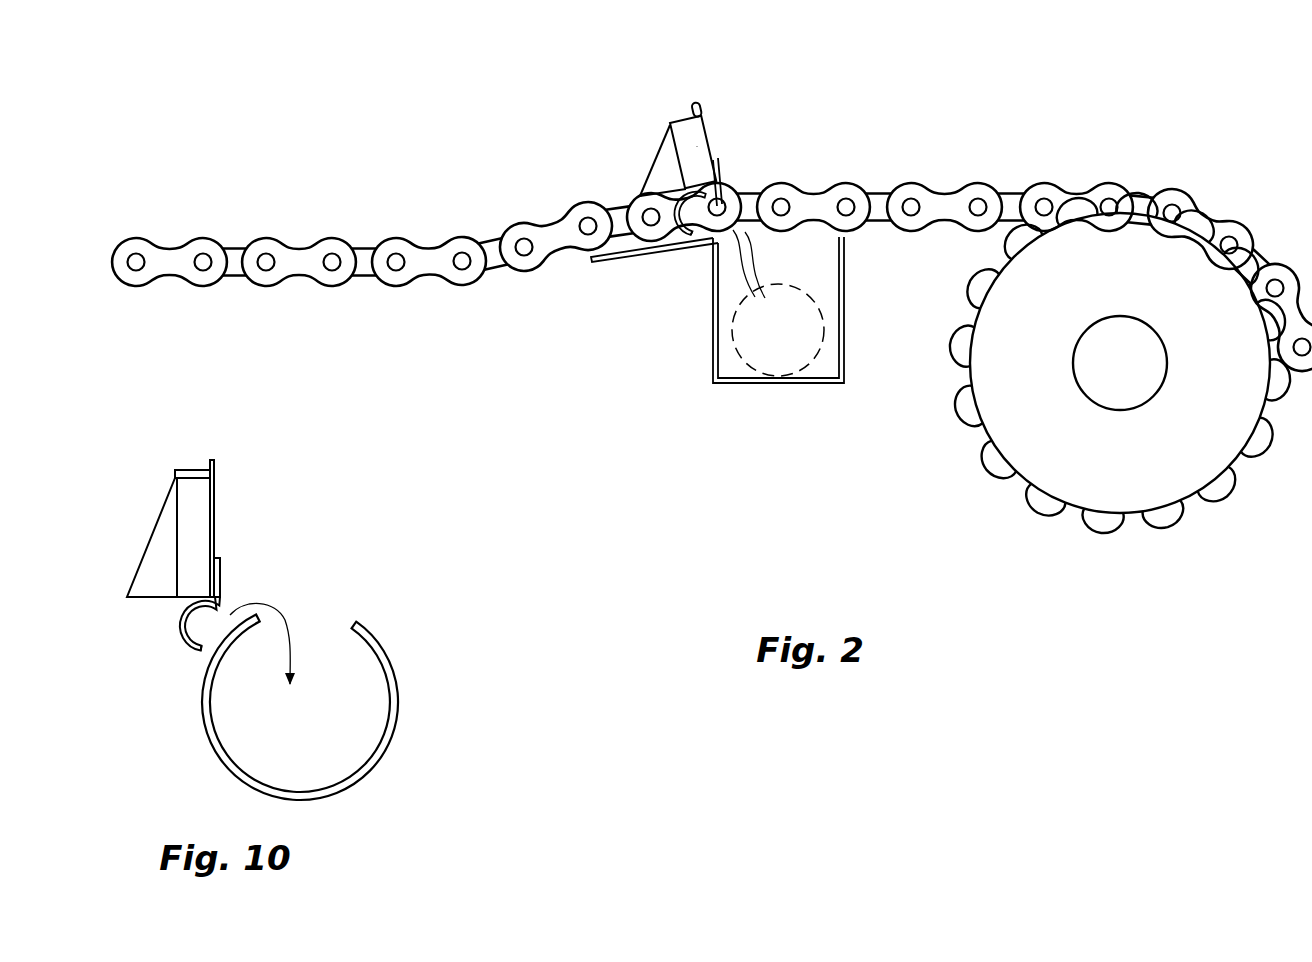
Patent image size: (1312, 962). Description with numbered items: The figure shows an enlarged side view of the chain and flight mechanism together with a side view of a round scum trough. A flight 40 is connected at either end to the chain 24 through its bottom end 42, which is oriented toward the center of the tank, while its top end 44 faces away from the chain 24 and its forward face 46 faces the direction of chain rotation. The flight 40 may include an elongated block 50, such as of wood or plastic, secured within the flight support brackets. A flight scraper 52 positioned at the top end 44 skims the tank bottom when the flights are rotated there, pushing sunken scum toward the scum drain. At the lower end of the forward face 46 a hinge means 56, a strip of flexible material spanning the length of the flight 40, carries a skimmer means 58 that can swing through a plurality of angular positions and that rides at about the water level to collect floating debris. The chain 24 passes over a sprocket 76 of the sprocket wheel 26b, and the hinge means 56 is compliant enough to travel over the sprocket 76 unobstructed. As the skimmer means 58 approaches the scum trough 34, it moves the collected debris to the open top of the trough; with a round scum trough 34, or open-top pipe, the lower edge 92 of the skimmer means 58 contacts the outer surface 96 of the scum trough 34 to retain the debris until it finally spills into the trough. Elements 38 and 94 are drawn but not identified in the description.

In FIG. 2, the chain 24 is at (452, 230).
In FIG. 2, the sprocket wheel 26b is at (1068, 458).
In FIG. 2, the scum trough 34 is at (808, 386).
In FIG. 10, the scum trough 34 is at (339, 684).
In FIG. 2, the plate 38 is at (598, 262).
In FIG. 2, the flight 40 is at (698, 186).
In FIG. 10, the flight 40 is at (192, 577).
In FIG. 2, the bottom end 42 is at (677, 181).
In FIG. 2, the top end 44 is at (671, 122).
In FIG. 2, the forward face 46 is at (722, 158).
In FIG. 2, the elongated block 50 is at (697, 146).
In FIG. 2, the flight scraper 52 is at (696, 104).
In FIG. 10, the flight scraper 52 is at (212, 462).
In FIG. 2, the hinge means 56 is at (734, 249).
In FIG. 10, the hinge means 56 is at (192, 641).
In FIG. 2, the skimmer means 58 is at (688, 240).
In FIG. 10, the skimmer means 58 is at (177, 633).
In FIG. 2, the sprocket 76 is at (980, 280).
In FIG. 10, the lower edge 92 is at (205, 661).
In FIG. 10, the ring 94 is at (398, 687).
In FIG. 10, the outer surface 96 is at (294, 616).